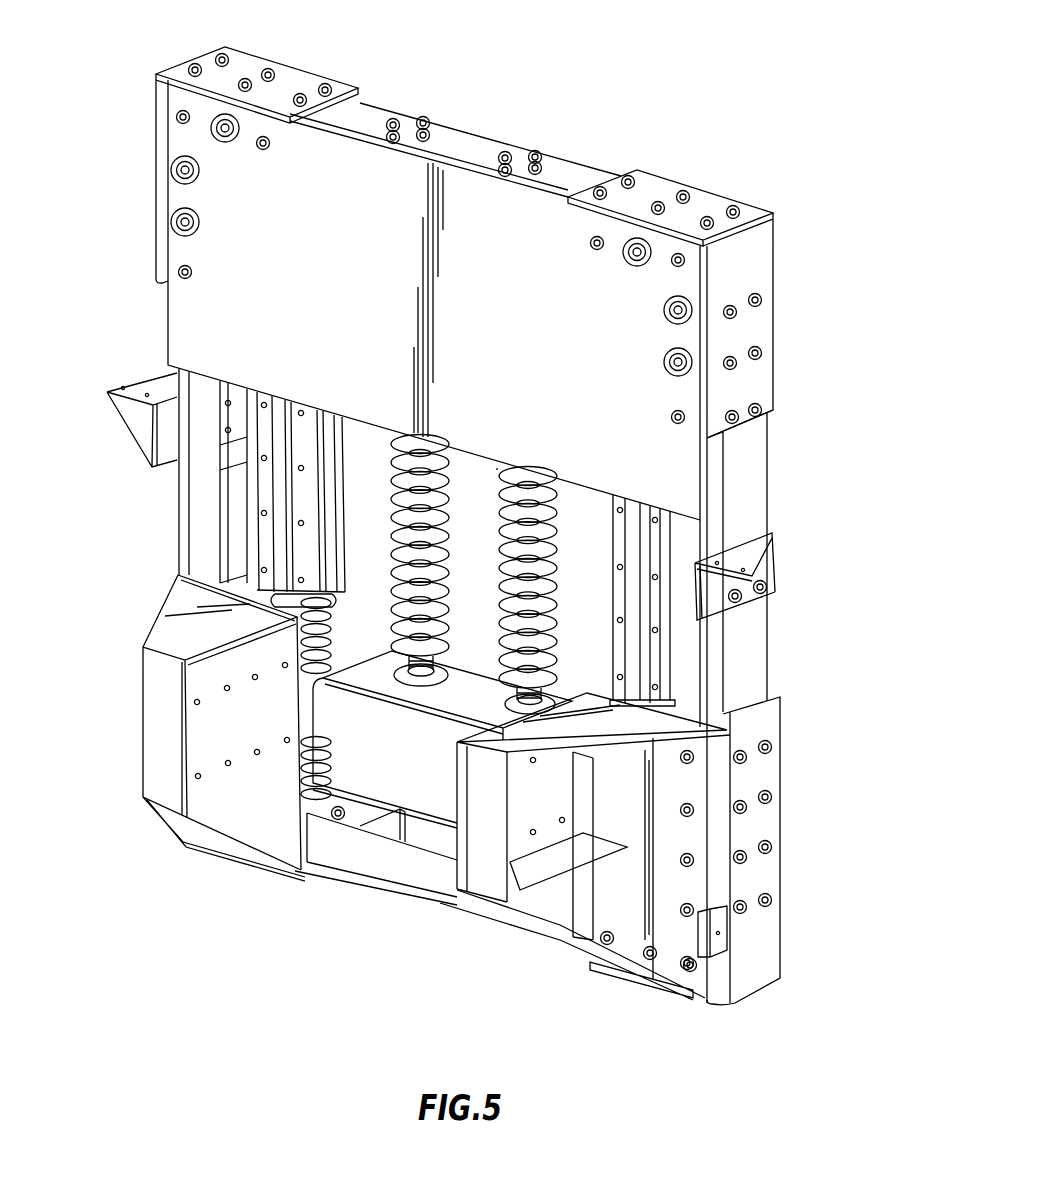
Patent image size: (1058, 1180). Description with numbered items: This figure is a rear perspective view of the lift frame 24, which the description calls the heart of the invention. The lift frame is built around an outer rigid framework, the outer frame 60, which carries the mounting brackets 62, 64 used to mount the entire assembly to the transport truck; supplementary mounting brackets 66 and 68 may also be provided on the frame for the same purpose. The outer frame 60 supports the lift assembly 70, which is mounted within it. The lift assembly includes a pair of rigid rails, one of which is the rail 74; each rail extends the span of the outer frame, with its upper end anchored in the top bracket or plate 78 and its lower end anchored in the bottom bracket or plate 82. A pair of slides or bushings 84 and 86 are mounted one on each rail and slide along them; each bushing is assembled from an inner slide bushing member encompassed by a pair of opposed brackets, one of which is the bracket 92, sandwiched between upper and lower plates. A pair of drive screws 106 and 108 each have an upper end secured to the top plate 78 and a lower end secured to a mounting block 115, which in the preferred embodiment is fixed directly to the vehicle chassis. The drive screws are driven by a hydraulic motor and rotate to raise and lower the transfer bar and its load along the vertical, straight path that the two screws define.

The lift frame 24 is at (728, 125).
The top bracket or plate 78 is at (487, 150).
The outer frame 60 is at (767, 483).
The supplementary mounting bracket 66 is at (753, 553).
The supplementary mounting bracket 68 is at (132, 418).
The lift assembly 70 is at (240, 525).
The slide/bushing 86 is at (334, 432).
The slide/bushing 84 is at (612, 500).
The drive screw 106 is at (506, 522).
The drive screw 108 is at (403, 508).
The bracket 92 is at (557, 642).
The rigid rail 74 is at (327, 623).
The mounting block 115 is at (385, 713).
The bottom bracket or plate 82 is at (368, 863).
The mounting bracket 64 is at (257, 828).
The mounting bracket 62 is at (483, 870).